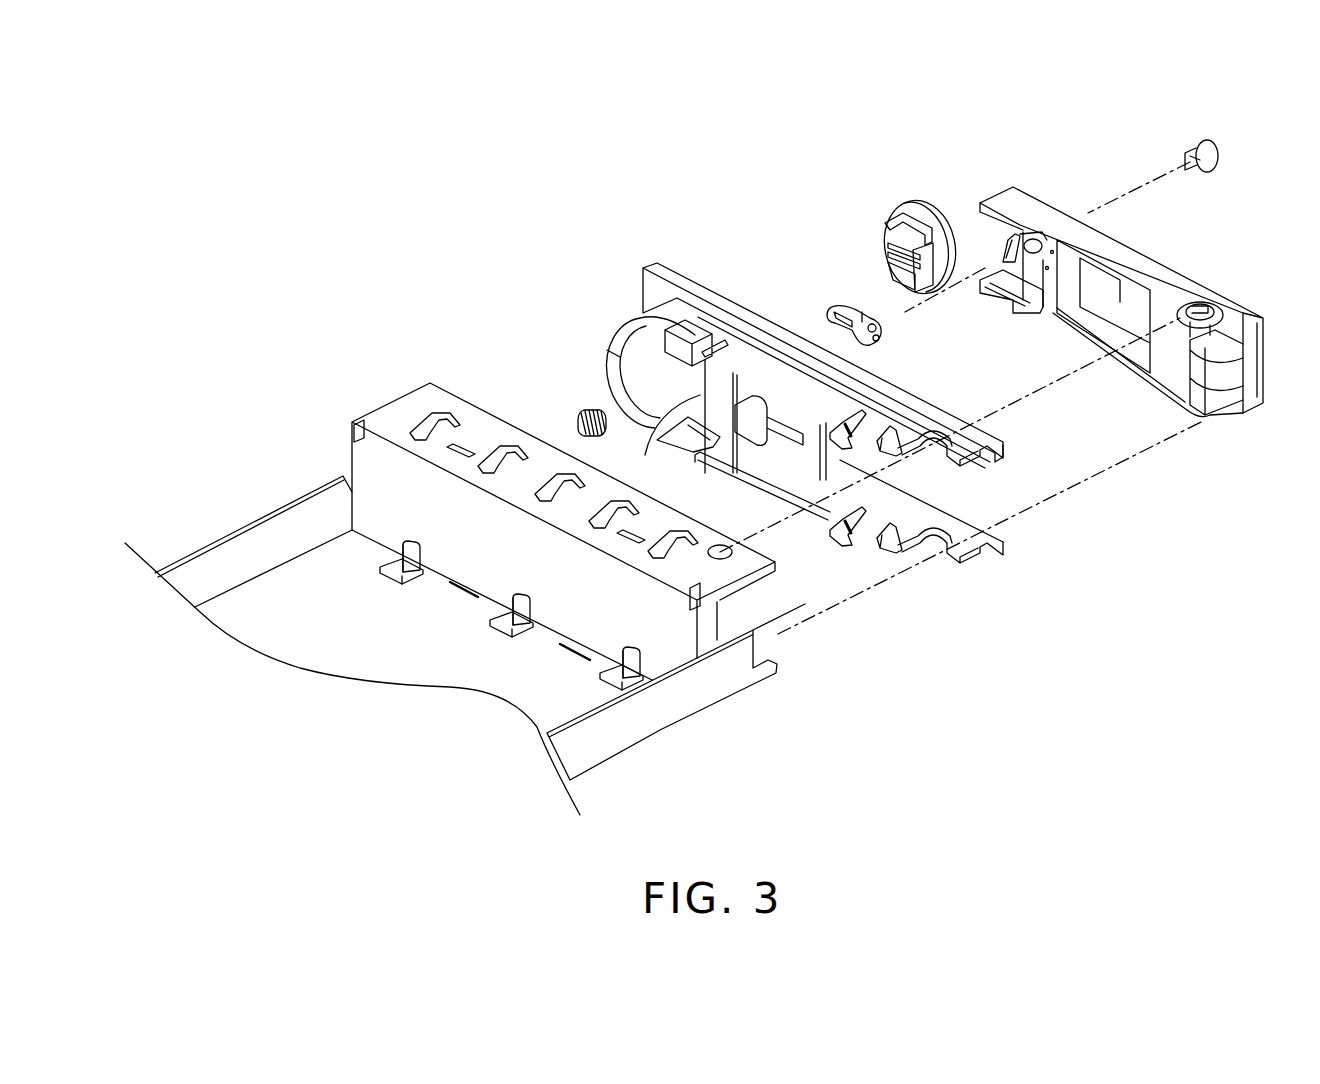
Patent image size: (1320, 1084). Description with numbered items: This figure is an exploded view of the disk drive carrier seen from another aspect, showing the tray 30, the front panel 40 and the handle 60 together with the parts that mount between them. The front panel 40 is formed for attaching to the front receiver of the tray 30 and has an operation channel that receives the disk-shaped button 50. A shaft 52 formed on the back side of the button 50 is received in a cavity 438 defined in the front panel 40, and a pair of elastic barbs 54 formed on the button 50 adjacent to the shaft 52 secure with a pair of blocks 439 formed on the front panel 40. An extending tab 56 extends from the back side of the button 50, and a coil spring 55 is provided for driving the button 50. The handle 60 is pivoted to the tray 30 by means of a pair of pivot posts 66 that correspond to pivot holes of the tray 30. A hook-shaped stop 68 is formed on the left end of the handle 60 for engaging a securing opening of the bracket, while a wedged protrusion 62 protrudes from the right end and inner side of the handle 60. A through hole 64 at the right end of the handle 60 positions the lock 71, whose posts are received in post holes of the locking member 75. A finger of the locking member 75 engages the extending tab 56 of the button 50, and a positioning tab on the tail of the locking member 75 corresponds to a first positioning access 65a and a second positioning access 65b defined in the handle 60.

The tray 30 is at (378, 395).
The coil spring 55 is at (567, 412).
The front panel 40 is at (633, 258).
The cavity 438 is at (625, 333).
The blocks 439 is at (688, 400).
The locking member 75 is at (822, 297).
The button 50 is at (905, 190).
The elastic barbs 54 is at (887, 215).
The shaft 52 is at (890, 243).
The extending tab 56 is at (887, 257).
The handle 60 is at (990, 183).
The wedged protrusion 62 is at (1002, 248).
The through hole 64 is at (1035, 238).
The first positioning access 65a is at (1068, 243).
The second positioning access 65b is at (1045, 272).
The pivot posts 66 is at (1207, 303).
The hook-shaped stop 68 is at (1243, 410).
The lock 71 is at (1183, 142).